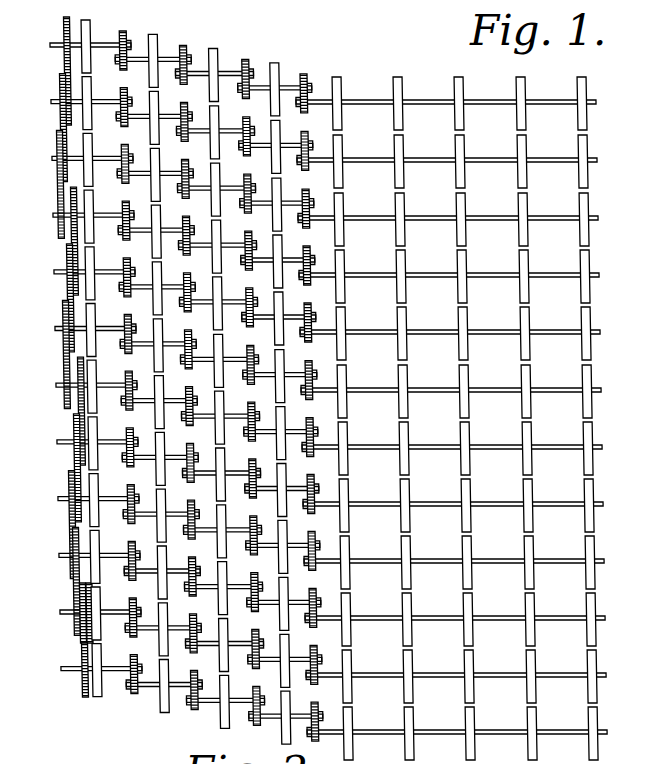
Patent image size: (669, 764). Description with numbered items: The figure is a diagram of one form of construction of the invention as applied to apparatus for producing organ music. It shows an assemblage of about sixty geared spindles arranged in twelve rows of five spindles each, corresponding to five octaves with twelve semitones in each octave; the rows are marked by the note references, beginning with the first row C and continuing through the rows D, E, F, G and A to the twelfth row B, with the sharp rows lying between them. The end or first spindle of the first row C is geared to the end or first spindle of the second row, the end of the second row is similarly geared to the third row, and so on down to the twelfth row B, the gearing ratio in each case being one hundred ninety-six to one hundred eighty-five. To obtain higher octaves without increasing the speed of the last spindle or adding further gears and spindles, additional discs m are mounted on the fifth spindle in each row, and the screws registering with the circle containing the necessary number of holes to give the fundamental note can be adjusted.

The additional discs m is at (340, 76).
The first row of geared spindles C is at (311, 71).
The third row of geared spindles D is at (313, 184).
The row of geared spindles for E is at (315, 298).
The row of geared spindles for F is at (316, 355).
The row of geared spindles for G is at (318, 468).
The row of geared spindles for A is at (319, 581).
The twelfth row of geared spindles B is at (323, 692).